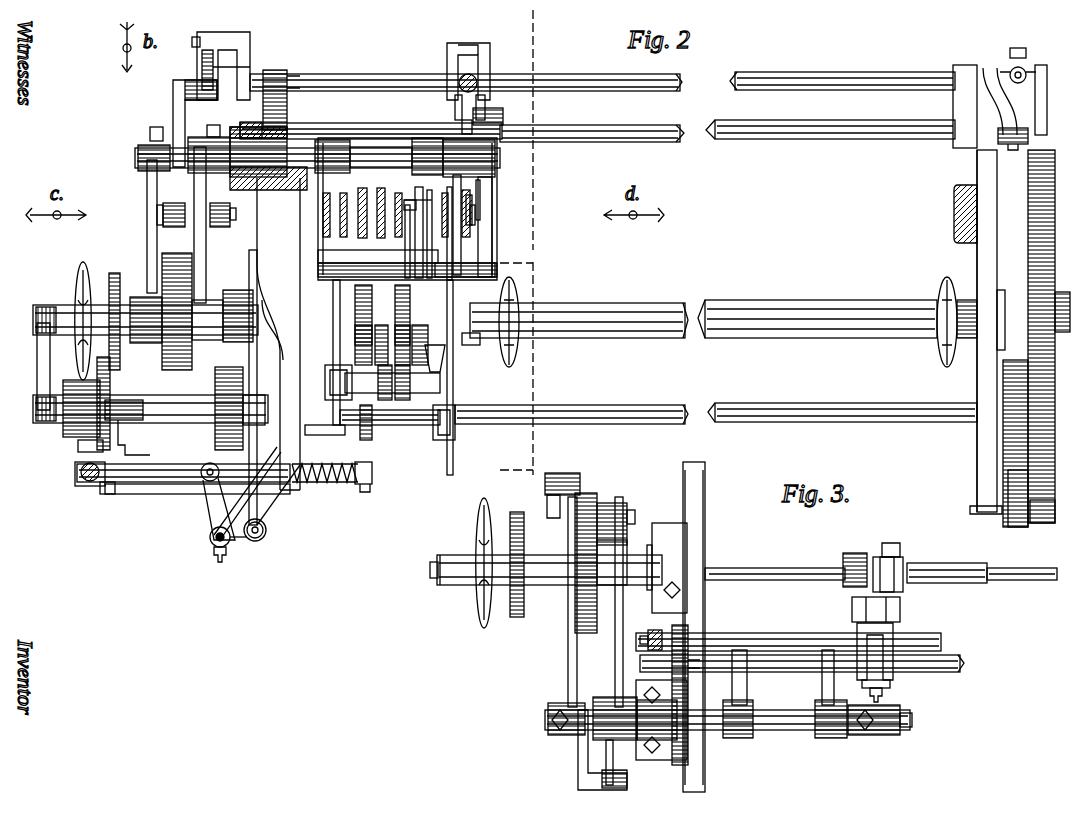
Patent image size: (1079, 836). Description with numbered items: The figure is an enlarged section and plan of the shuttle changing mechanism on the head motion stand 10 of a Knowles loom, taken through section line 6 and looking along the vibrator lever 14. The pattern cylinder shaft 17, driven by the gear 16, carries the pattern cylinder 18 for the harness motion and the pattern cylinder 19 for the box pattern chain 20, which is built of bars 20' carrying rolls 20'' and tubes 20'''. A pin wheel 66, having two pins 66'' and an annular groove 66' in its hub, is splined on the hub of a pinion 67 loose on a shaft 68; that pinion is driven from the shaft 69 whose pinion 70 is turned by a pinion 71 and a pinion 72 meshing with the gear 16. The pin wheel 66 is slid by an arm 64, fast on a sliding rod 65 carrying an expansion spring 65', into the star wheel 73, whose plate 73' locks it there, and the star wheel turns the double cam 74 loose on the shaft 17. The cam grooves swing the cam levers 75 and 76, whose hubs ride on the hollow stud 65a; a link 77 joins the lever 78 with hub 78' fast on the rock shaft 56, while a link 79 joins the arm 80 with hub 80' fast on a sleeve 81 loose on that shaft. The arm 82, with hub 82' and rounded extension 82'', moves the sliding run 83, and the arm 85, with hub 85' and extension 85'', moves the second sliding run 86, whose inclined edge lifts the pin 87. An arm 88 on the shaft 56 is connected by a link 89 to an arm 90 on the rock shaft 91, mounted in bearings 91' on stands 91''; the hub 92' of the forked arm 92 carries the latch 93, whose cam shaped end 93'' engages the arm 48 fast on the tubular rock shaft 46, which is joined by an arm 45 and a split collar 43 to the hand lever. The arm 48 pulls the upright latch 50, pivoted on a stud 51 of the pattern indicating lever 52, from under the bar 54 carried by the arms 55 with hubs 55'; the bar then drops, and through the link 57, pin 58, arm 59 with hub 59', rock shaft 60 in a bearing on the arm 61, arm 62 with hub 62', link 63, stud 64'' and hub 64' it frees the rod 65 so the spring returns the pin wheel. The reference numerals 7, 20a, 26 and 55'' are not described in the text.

In FIG. 2, the section line 6 is at (525, 244).
In FIG. 2, the shaft 7 is at (35, 320).
In FIG. 2, the head motion stand 10 is at (957, 208).
In FIG. 3, the head motion stand 10 is at (695, 510).
In FIG. 2, the vibrator lever 14 is at (428, 200).
In FIG. 2, the gear 16 is at (1038, 220).
In FIG. 2, the pattern cylinder shaft 17 is at (1058, 325).
In FIG. 3, the pattern cylinder shaft 17 is at (435, 570).
In FIG. 2, the pattern cylinder 18 is at (612, 305).
In FIG. 2, the pattern cylinder 19 is at (440, 352).
In FIG. 2, the pattern chain 20 is at (464, 379).
In FIG. 2, the bars 20' is at (420, 365).
In FIG. 2, the rolls 20'' is at (368, 372).
In FIG. 2, the tubes 20''' is at (390, 435).
In FIG. 2, the block 20a is at (333, 372).
In FIG. 2, the gear 26 is at (226, 292).
In FIG. 2, the split collar 43 is at (1012, 68).
In FIG. 2, the arm 45 is at (1005, 115).
In FIG. 2, the rock shaft 46 is at (615, 137).
In FIG. 3, the rock shaft 46 is at (945, 568).
In FIG. 2, the arm 48 is at (483, 116).
In FIG. 3, the arm 48 is at (895, 585).
In FIG. 2, the upright latch 50 is at (475, 182).
In FIG. 2, the stud 51 is at (502, 210).
In FIG. 2, the pattern indicating lever 52 is at (472, 200).
In FIG. 2, the bar 54 is at (372, 130).
In FIG. 3, the bar 54 is at (768, 636).
In FIG. 2, the arms 55 is at (407, 209).
In FIG. 3, the arms 55 is at (783, 677).
In FIG. 2, the hubs 55' is at (332, 162).
In FIG. 3, the hubs 55' is at (792, 735).
In FIG. 2, the gear 55'' is at (427, 156).
In FIG. 2, the rock shaft 56 is at (150, 152).
In FIG. 3, the rock shaft 56 is at (548, 718).
In FIG. 2, the link 57 is at (250, 128).
In FIG. 3, the link 57 is at (655, 630).
In FIG. 2, the pin 58 is at (266, 534).
In FIG. 2, the arm 59 is at (257, 544).
In FIG. 2, the hub 59' is at (206, 545).
In FIG. 2, the rock shaft 60 is at (216, 556).
In FIG. 2, the arm 61 is at (268, 490).
In FIG. 2, the arm 62 is at (200, 510).
In FIG. 2, the hub 62' is at (220, 408).
In FIG. 2, the link 63 is at (138, 492).
In FIG. 2, the arm 64 is at (128, 427).
In FIG. 2, the hub 64' is at (97, 503).
In FIG. 2, the stud or screw 64'' is at (70, 488).
In FIG. 2, the sliding rod 65 is at (218, 478).
In FIG. 2, the expansion spring 65' is at (325, 485).
In FIG. 2, the hollow stud 65a is at (240, 485).
In FIG. 2, the pin wheel 66 is at (70, 421).
In FIG. 2, the annular groove 66' is at (122, 402).
In FIG. 2, the pins 66'' is at (71, 456).
In FIG. 2, the pinion 67 is at (202, 480).
In FIG. 2, the shaft 68 is at (38, 405).
In FIG. 2, the shaft 69 is at (565, 405).
In FIG. 2, the pinion 70 is at (1012, 420).
In FIG. 2, the pinion 71 is at (1012, 482).
In FIG. 2, the pinion 72 is at (1042, 518).
In FIG. 2, the star wheel 73 is at (66, 318).
In FIG. 3, the star wheel 73 is at (464, 563).
In FIG. 2, the plate or disk 73' is at (102, 301).
In FIG. 3, the plate or disk 73' is at (503, 587).
In FIG. 2, the double cam 74 is at (168, 262).
In FIG. 3, the double cam 74 is at (582, 500).
In FIG. 2, the cam lever 75 is at (150, 298).
In FIG. 3, the cam lever 75 is at (553, 508).
In FIG. 2, the cam lever 76 is at (207, 320).
In FIG. 3, the cam lever 76 is at (632, 515).
In FIG. 2, the link 77 is at (172, 210).
In FIG. 3, the link 77 is at (568, 655).
In FIG. 2, the lever 78 is at (135, 226).
In FIG. 2, the hub 78' is at (138, 158).
In FIG. 3, the hub 78' is at (549, 733).
In FIG. 2, the link 79 is at (226, 222).
In FIG. 3, the link 79 is at (618, 650).
In FIG. 2, the arm 80 is at (187, 225).
In FIG. 2, the hub 80' is at (208, 140).
In FIG. 3, the hub 80' is at (591, 730).
In FIG. 2, the sleeve 81 is at (250, 175).
In FIG. 2, the arm 82 is at (489, 223).
In FIG. 2, the hub 82' is at (484, 163).
In FIG. 3, the hub 82' is at (882, 735).
In FIG. 2, the rounded side extension 82'' is at (465, 259).
In FIG. 2, the sliding run 83 is at (448, 240).
In FIG. 2, the arm 85 is at (396, 208).
In FIG. 2, the hub 85' is at (282, 137).
In FIG. 3, the hub 85' is at (689, 735).
In FIG. 2, the rounded side extension 85'' is at (378, 256).
In FIG. 2, the sliding run 86 is at (402, 238).
In FIG. 2, the stud or pin 87 is at (427, 197).
In FIG. 2, the arm 88 is at (177, 115).
In FIG. 3, the arm 88 is at (582, 760).
In FIG. 2, the link 89 is at (205, 62).
In FIG. 3, the link 89 is at (608, 755).
In FIG. 2, the arm 90 is at (248, 58).
In FIG. 2, the rock shaft 91 is at (602, 69).
In FIG. 3, the rock shaft 91 is at (802, 653).
In FIG. 2, the bearings 91' is at (610, 80).
In FIG. 3, the bearings 91' is at (687, 682).
In FIG. 2, the stands 91'' is at (616, 70).
In FIG. 3, the stands 91'' is at (726, 639).
In FIG. 2, the forked arm 92 is at (490, 63).
In FIG. 3, the forked arm 92 is at (892, 651).
In FIG. 2, the hub 92' is at (494, 87).
In FIG. 3, the hub 92' is at (890, 690).
In FIG. 2, the latch 93 is at (475, 58).
In FIG. 3, the cam shaped end 93'' is at (895, 610).